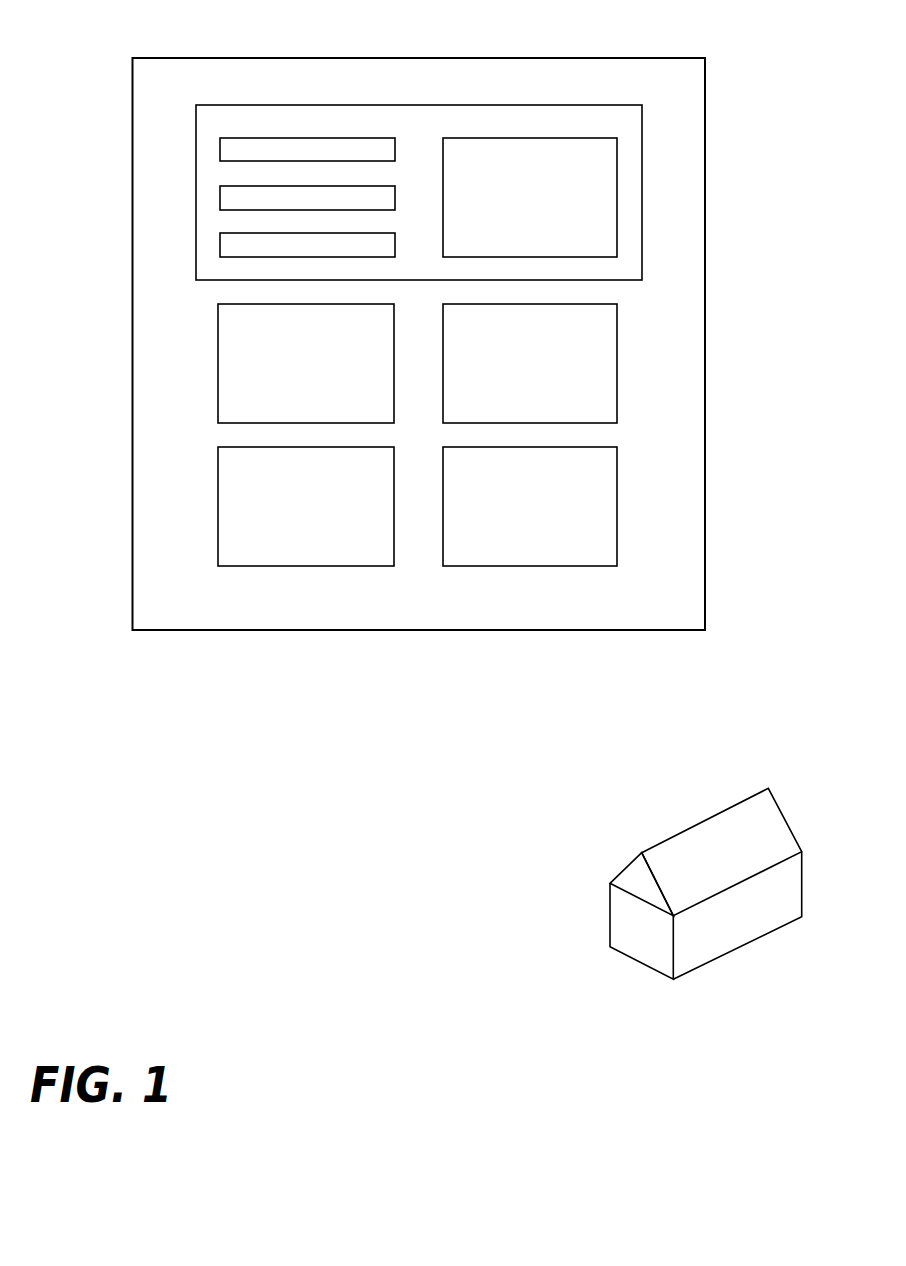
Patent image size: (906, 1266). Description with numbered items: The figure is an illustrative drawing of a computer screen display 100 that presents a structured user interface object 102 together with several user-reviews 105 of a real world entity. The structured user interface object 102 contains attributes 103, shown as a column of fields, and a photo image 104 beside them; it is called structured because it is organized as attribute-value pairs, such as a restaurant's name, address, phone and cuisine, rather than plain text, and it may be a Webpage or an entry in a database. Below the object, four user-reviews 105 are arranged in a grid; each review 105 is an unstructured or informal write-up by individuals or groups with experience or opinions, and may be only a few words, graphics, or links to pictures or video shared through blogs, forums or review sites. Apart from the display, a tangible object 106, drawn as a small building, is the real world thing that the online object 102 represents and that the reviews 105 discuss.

The computer screen display 100 is at (705, 273).
The structured user interface object 102 is at (196, 192).
The attributes 103 is at (308, 137).
The photo image 104 is at (617, 197).
The user-reviews 105 is at (218, 362).
The tangible object 106 is at (707, 819).